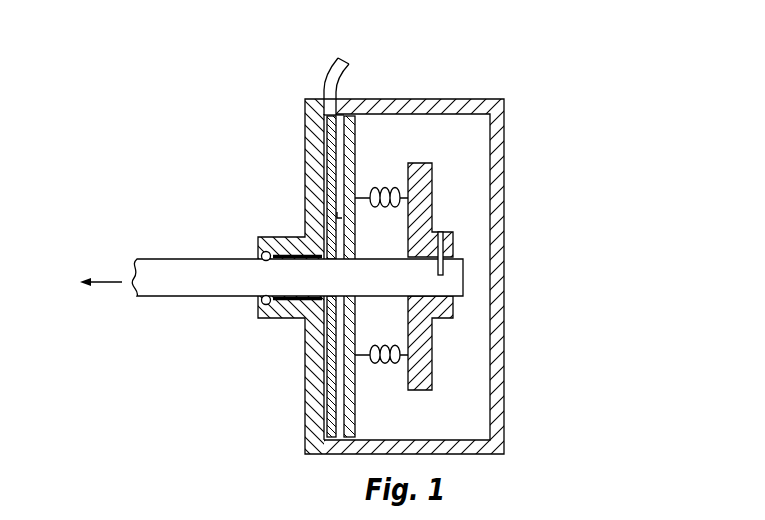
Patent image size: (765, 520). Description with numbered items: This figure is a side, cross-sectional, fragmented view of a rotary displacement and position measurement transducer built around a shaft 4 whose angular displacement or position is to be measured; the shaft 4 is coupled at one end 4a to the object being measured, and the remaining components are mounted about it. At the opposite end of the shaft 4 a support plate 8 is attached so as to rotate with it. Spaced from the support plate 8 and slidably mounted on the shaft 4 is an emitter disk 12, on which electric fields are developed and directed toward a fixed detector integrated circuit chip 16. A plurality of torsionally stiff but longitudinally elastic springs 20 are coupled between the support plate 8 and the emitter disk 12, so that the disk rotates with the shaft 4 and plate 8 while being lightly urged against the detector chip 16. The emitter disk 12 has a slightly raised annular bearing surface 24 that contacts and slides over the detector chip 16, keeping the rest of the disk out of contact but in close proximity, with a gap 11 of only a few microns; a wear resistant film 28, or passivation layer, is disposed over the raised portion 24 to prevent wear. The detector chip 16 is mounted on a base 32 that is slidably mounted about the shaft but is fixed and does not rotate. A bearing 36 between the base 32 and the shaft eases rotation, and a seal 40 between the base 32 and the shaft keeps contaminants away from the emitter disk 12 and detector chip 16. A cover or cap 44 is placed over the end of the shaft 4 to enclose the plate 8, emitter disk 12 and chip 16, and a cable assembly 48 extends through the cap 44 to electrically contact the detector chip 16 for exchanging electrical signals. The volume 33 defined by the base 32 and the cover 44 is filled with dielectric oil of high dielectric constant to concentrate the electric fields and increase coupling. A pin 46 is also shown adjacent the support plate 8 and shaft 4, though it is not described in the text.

The shaft 4 is at (152, 272).
The end of shaft 4a is at (88, 281).
The support plate 8 is at (426, 190).
The gap 11 is at (340, 135).
The emitter disk 12 is at (350, 135).
The detector integrated circuit chip 16 is at (328, 408).
The springs 20 is at (375, 365).
The bearing surface 24 is at (340, 218).
The wear resistant film 28 is at (325, 325).
The base 32 is at (313, 131).
The volume 33 is at (465, 202).
The bearing 36 is at (260, 321).
The seal 40 is at (260, 255).
The cover or cap 44 is at (497, 133).
The pin 46 is at (450, 277).
The cable assembly 48 is at (333, 73).